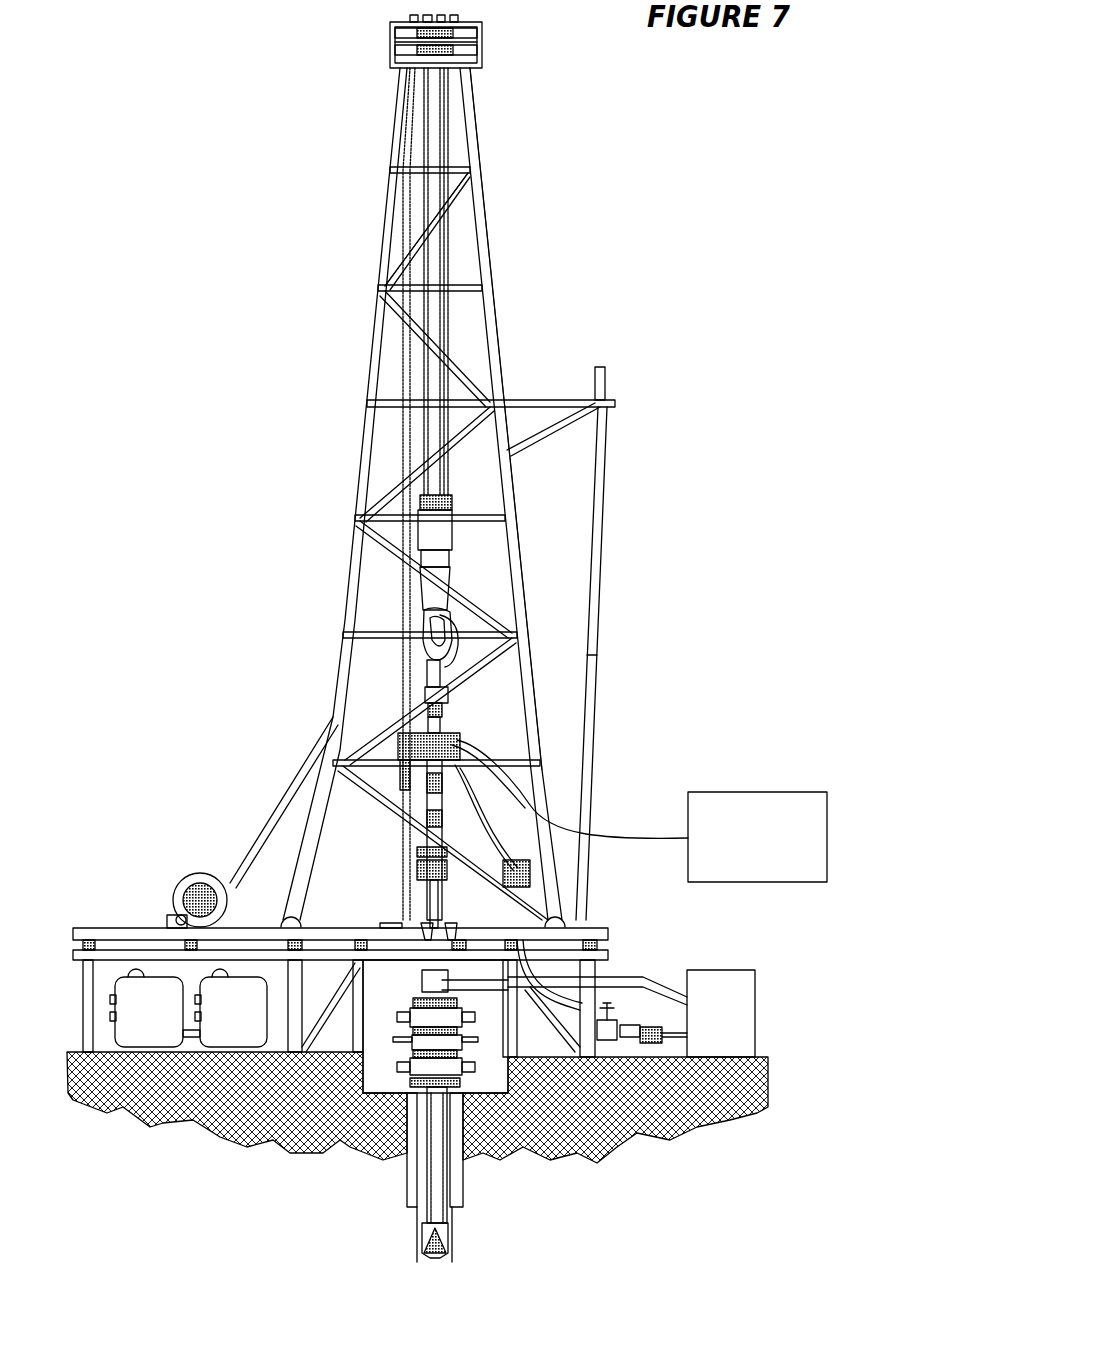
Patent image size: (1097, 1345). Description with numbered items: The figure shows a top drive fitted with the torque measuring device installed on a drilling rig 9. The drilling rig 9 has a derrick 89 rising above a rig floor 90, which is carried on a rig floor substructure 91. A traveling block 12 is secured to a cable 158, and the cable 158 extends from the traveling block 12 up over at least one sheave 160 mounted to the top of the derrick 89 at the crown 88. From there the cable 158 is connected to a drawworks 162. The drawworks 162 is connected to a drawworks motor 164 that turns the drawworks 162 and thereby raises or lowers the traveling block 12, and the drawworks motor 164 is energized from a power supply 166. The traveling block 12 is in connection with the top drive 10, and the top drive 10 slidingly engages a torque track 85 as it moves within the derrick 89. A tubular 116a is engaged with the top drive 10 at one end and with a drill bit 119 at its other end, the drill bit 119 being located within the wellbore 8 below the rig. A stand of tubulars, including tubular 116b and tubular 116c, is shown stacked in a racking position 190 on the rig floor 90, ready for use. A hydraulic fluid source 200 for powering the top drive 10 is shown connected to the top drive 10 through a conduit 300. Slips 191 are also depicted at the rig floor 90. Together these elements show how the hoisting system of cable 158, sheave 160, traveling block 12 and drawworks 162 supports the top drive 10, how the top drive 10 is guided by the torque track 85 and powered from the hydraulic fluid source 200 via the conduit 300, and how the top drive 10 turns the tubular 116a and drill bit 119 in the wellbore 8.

The drilling rig 9 is at (266, 56).
The sheave 160 is at (417, 32).
The crown 88 is at (486, 49).
The cable 158 is at (450, 247).
The derrick 89 is at (497, 347).
The racking position 190 is at (612, 404).
The tubular 116b is at (600, 517).
The traveling block 12 is at (443, 532).
The torque track 85 is at (407, 603).
The top drive 10 is at (485, 680).
The tubular 116c is at (587, 774).
The conduit 300 is at (628, 838).
The hydraulic fluid source 200 is at (755, 792).
The rig floor 90 is at (595, 928).
The slips 191 is at (467, 913).
The drawworks 162 is at (176, 900).
The rig floor substructure 91 is at (84, 1012).
The power supply 166 is at (148, 1027).
The drawworks motor 164 is at (235, 1028).
The tubular 116a is at (440, 1180).
The drill bit 119 is at (422, 1240).
The wellbore 8 is at (453, 1217).